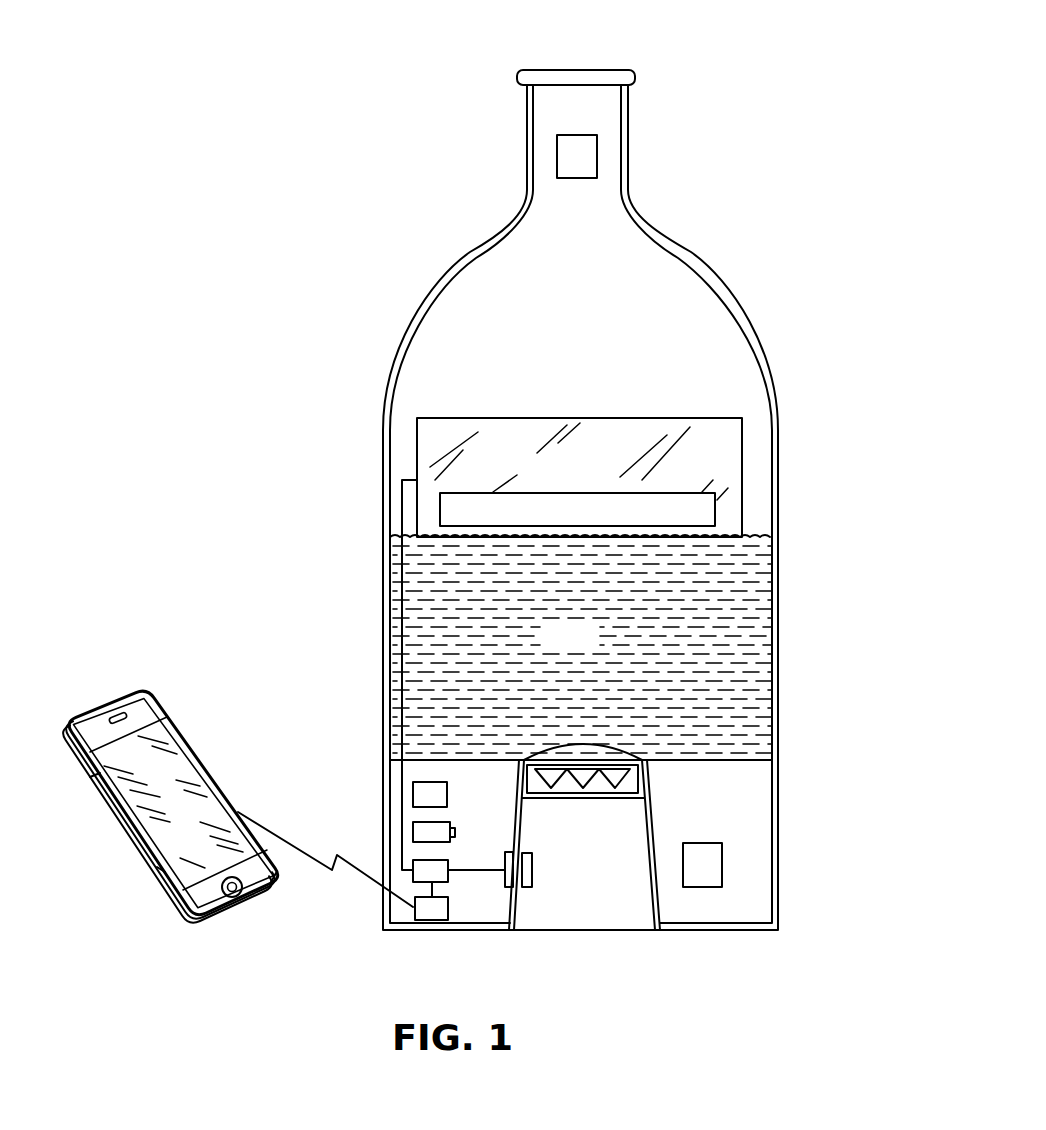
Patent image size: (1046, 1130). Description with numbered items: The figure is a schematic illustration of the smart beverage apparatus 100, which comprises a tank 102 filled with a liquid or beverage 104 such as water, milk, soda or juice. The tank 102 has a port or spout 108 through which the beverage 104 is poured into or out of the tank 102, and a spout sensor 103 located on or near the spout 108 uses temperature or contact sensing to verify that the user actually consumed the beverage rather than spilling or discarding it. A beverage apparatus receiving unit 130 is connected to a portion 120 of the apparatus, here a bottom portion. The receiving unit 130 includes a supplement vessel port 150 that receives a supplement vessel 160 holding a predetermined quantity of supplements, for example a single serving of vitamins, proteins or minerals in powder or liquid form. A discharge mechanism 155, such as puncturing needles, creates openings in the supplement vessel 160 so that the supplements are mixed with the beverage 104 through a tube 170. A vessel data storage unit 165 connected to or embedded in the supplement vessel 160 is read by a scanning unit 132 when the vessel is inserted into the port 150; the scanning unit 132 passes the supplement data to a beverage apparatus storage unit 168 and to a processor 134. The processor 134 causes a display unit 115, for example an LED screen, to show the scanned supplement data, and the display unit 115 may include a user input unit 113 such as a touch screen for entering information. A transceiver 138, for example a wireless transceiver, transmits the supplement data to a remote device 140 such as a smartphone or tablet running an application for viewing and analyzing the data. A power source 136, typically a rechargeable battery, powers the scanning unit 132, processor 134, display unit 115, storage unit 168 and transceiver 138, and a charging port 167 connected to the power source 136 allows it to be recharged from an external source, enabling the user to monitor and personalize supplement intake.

The smart beverage apparatus 100 is at (663, 96).
The tank 102 is at (775, 420).
The spout sensor 103 is at (597, 153).
The beverage 104 is at (588, 649).
The spout 108 is at (552, 70).
The user input unit 113 is at (670, 492).
The display unit 115 is at (586, 465).
The portion 120 is at (601, 959).
The beverage apparatus receiving unit 130 is at (780, 787).
The scanning unit 132 is at (503, 882).
The processor 134 is at (448, 863).
The power source 136 is at (455, 830).
The transceiver 138 is at (433, 920).
The remote device 140 is at (138, 687).
The supplement vessel port 150 is at (657, 930).
The discharge mechanism 155 is at (568, 784).
The supplement vessel 160 is at (563, 930).
The vessel data storage unit 165 is at (532, 882).
The charging port 167 is at (447, 793).
The beverage apparatus storage unit 168 is at (722, 862).
The tube 170 is at (642, 775).